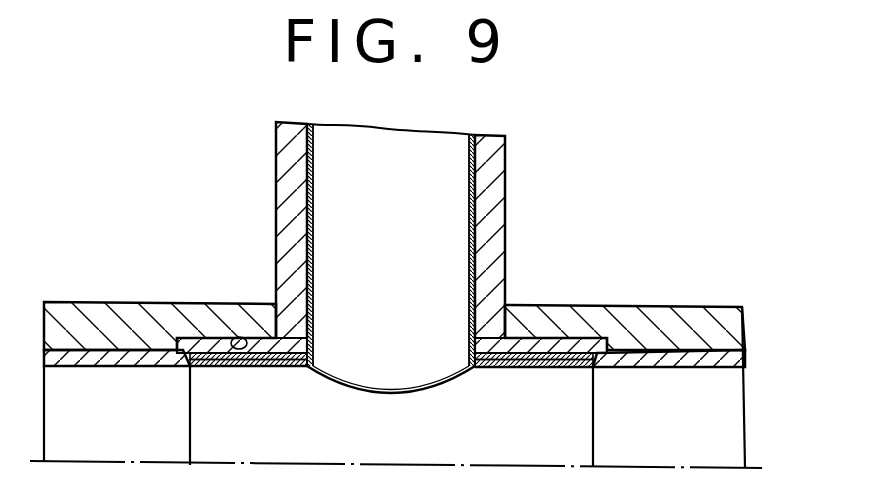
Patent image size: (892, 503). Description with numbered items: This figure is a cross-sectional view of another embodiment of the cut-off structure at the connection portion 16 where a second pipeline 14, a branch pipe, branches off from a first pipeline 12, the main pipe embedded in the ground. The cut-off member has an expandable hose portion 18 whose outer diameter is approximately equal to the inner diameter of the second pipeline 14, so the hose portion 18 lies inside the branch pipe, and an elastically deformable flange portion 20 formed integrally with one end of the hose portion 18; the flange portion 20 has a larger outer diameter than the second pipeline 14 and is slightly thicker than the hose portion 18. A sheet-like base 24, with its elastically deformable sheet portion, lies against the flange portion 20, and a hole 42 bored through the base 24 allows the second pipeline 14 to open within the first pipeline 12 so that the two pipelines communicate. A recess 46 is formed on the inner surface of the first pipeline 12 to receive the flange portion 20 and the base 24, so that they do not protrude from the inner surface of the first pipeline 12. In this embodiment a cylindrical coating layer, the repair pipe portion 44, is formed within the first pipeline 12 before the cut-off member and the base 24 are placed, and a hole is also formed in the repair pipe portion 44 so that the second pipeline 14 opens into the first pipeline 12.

The first pipeline 12 is at (690, 318).
The second pipeline 14 is at (505, 210).
The connection portion 16 is at (512, 327).
The hose portion 18 is at (473, 157).
The flange portion 20 is at (528, 368).
The base 24 is at (573, 368).
The hole 42 is at (437, 388).
The repair pipe portion 44 is at (690, 367).
The recess 46 is at (234, 337).